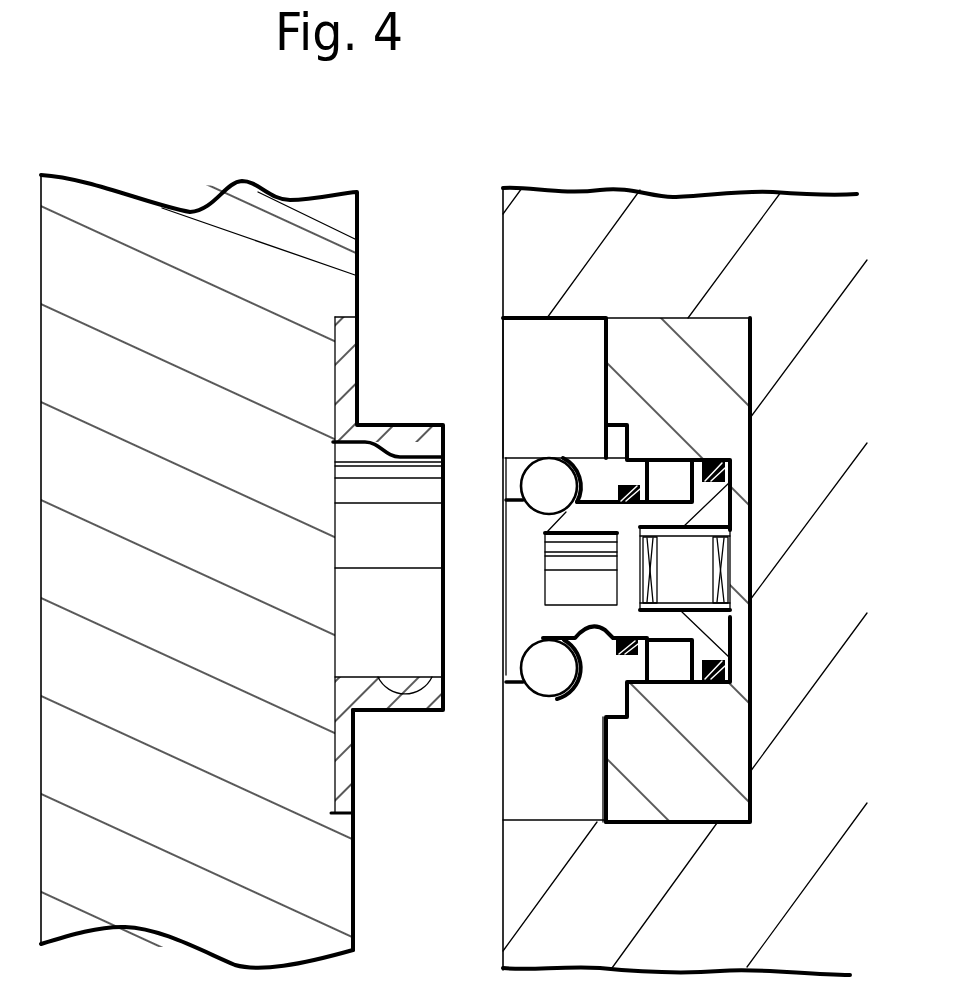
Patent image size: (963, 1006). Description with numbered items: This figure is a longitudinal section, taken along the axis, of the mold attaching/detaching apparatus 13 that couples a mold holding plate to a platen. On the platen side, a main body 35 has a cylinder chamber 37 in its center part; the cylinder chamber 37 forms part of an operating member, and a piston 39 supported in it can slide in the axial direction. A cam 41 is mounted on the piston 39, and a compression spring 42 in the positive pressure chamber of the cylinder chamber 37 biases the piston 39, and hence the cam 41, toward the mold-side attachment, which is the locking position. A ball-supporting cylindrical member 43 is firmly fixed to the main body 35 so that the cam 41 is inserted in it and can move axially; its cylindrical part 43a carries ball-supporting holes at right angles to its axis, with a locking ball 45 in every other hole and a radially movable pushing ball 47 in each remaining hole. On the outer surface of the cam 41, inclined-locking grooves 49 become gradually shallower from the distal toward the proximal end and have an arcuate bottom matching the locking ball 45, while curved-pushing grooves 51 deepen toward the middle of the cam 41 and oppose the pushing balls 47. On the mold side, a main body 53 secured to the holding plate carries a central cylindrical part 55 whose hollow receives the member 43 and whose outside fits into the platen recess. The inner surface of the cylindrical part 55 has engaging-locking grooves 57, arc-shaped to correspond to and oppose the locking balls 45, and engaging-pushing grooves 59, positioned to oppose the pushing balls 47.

The mold attaching/detaching apparatus 13 is at (502, 129).
The main body 35 is at (720, 362).
The cylinder chamber 37 is at (673, 481).
The piston 39 is at (717, 628).
The cam 41 is at (568, 580).
The compression spring 42 is at (650, 576).
The ball-supporting cylindrical member 43 is at (520, 461).
The cylindrical part 43a is at (522, 457).
The locking ball 45 is at (563, 482).
The pushing ball 47 is at (547, 673).
The inclined-locking groove 49 is at (567, 466).
The curved-pushing groove 51 is at (590, 634).
The main body 53 is at (355, 748).
The cylindrical part 55 is at (388, 433).
The engaging-locking groove 57 is at (370, 445).
The engaging-pushing groove 59 is at (413, 690).